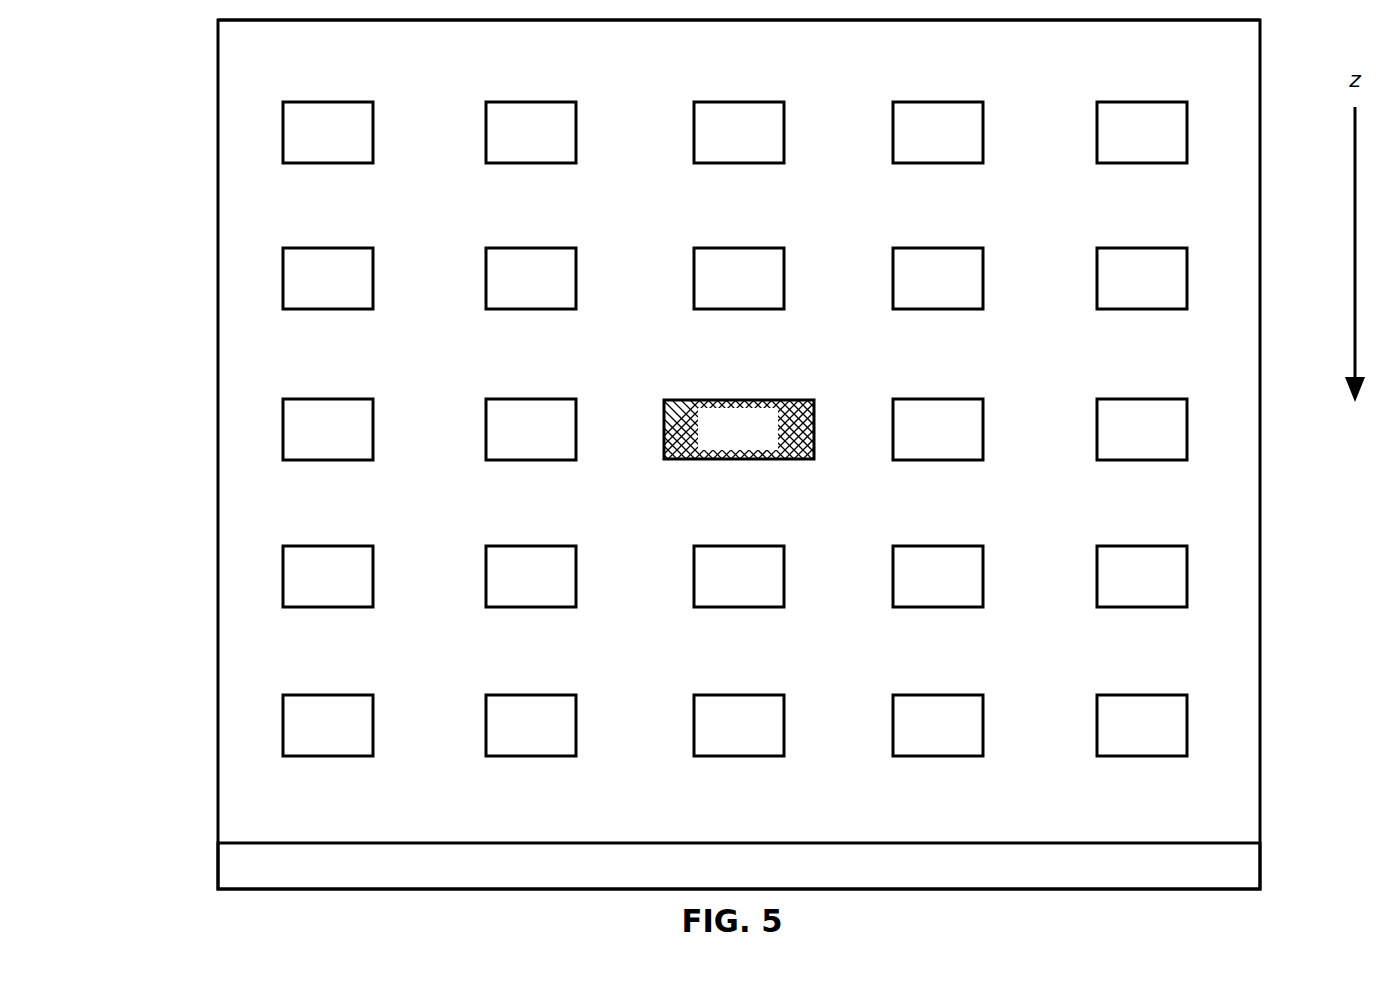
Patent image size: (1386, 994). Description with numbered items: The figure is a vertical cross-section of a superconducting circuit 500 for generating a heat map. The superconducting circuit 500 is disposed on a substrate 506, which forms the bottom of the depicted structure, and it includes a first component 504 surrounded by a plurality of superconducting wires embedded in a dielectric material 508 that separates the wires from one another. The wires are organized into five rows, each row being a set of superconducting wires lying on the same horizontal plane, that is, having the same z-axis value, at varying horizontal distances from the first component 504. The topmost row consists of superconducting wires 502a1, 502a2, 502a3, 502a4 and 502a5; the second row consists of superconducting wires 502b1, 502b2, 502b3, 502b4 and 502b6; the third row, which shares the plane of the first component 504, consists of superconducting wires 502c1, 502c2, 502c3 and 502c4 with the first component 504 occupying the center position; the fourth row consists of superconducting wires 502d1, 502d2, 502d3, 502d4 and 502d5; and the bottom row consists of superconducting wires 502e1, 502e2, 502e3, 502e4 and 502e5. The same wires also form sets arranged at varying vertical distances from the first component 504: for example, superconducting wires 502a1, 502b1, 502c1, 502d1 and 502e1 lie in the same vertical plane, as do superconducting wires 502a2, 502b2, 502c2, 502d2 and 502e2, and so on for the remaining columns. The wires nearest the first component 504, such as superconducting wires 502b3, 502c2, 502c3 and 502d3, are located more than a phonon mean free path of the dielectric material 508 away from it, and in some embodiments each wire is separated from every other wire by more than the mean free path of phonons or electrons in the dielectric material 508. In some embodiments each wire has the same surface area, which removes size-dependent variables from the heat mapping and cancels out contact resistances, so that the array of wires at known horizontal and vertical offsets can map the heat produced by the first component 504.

The superconducting circuit 500 is at (135, 93).
The superconducting wire 502a1 is at (294, 142).
The superconducting wire 502a2 is at (497, 142).
The superconducting wire 502a3 is at (705, 142).
The superconducting wire 502a4 is at (904, 142).
The superconducting wire 502a5 is at (1108, 142).
The superconducting wire 502b1 is at (294, 288).
The superconducting wire 502b2 is at (497, 288).
The superconducting wire 502b3 is at (705, 288).
The superconducting wire 502b4 is at (904, 288).
The superconducting wire 502b6 is at (1108, 288).
The superconducting wire 502c1 is at (294, 439).
The superconducting wire 502c2 is at (497, 439).
The superconducting wire 502c3 is at (904, 439).
The superconducting wire 502c4 is at (1108, 439).
The superconducting wire 502d1 is at (294, 586).
The superconducting wire 502d2 is at (497, 586).
The superconducting wire 502d3 is at (705, 586).
The superconducting wire 502d4 is at (904, 586).
The superconducting wire 502d5 is at (1108, 586).
The superconducting wire 502e1 is at (294, 735).
The superconducting wire 502e2 is at (497, 735).
The superconducting wire 502e3 is at (705, 735).
The superconducting wire 502e4 is at (904, 735).
The superconducting wire 502e5 is at (1108, 735).
The first component 504 is at (718, 441).
The substrate 506 is at (717, 876).
The dielectric material 508 is at (269, 52).